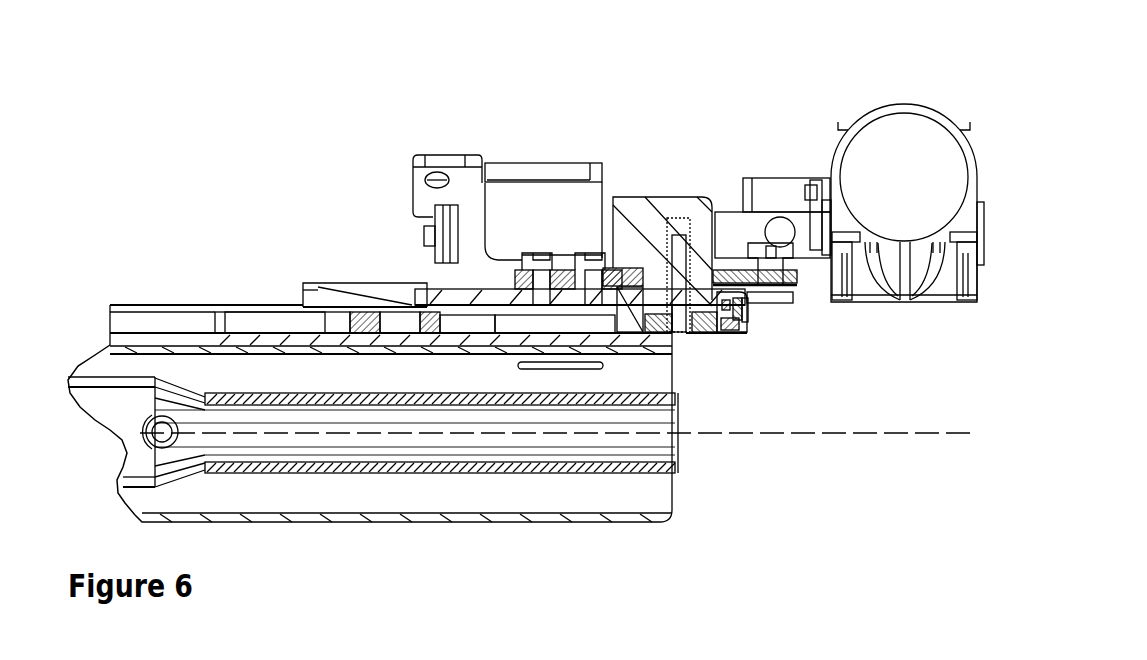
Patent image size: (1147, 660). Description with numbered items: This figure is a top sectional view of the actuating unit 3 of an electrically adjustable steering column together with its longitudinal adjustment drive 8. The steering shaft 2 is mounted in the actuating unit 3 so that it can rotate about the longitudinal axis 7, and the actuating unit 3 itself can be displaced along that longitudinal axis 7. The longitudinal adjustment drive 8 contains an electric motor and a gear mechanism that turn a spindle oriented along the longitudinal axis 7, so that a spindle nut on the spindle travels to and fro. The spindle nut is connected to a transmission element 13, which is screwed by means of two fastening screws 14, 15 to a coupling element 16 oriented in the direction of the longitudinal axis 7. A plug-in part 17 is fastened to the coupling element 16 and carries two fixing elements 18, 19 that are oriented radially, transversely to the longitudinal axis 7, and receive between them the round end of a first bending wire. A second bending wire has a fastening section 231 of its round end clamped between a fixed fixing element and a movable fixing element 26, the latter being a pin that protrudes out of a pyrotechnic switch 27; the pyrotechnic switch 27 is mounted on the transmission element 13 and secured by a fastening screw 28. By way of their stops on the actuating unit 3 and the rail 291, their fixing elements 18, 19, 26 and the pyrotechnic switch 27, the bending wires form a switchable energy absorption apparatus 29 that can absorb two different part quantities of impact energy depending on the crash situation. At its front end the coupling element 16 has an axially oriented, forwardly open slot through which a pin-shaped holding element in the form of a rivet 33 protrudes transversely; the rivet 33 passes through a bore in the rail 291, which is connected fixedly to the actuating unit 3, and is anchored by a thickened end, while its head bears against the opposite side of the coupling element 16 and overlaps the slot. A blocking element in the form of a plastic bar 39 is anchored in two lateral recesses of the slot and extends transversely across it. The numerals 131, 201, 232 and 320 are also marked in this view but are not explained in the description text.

The steering shaft 2 is at (113, 380).
The actuating unit 3 is at (185, 344).
The longitudinal axis 7 is at (931, 432).
The longitudinal adjustment drive 8 is at (882, 97).
The transmission element 13 is at (567, 272).
The fastening screw 14 is at (592, 277).
The fastening screw 15 is at (538, 282).
The coupling element 16 is at (480, 297).
The plug-in part 17 is at (360, 292).
The fixing element 18 is at (395, 312).
The fixing element 19 is at (337, 313).
The movable fixing element 26 is at (677, 340).
The pyrotechnic switch 27 is at (645, 223).
The fastening screw 28 is at (767, 265).
The energy absorption apparatus 29 is at (237, 305).
The rivet 33 is at (735, 327).
The plastic bar 39 is at (747, 317).
The screw head 131 is at (790, 290).
The seal 201 is at (365, 318).
The fastening section 231 is at (653, 330).
The sealing ring 232 is at (710, 292).
The rail 291 is at (712, 337).
The mounting plate 320 is at (724, 225).